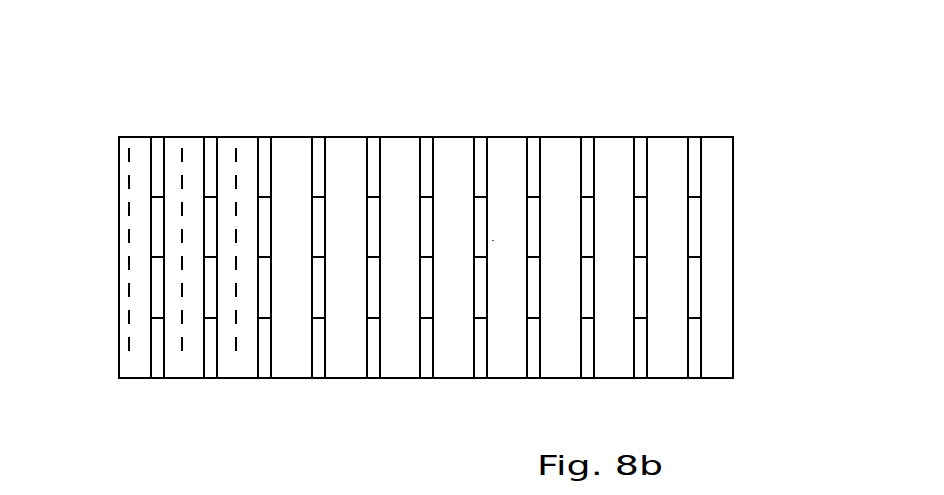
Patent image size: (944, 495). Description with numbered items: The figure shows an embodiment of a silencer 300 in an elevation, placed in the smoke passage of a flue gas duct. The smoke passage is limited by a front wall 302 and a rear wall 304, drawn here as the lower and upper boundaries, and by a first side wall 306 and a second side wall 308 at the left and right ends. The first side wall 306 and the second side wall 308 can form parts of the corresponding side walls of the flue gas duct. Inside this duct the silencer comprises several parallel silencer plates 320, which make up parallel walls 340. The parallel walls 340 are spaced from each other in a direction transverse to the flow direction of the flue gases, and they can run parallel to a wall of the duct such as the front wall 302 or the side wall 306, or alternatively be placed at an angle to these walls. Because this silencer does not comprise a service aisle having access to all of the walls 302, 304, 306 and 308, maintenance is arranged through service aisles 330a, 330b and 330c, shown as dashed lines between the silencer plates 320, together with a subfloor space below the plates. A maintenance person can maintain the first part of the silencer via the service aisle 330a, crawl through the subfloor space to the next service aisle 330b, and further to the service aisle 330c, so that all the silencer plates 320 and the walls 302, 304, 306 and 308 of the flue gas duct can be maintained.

The pallet / panel structure 300 is at (359, 290).
The front wall 302 is at (389, 388).
The rear wall 304 is at (402, 125).
The first side wall 306 is at (97, 232).
The second side wall 308 is at (742, 278).
The silencer plate 320 is at (425, 228).
The service aisle 330a is at (129, 150).
The second service aisle 330b is at (183, 150).
The service aisle 330c is at (236, 150).
The parallel walls 340 is at (493, 240).